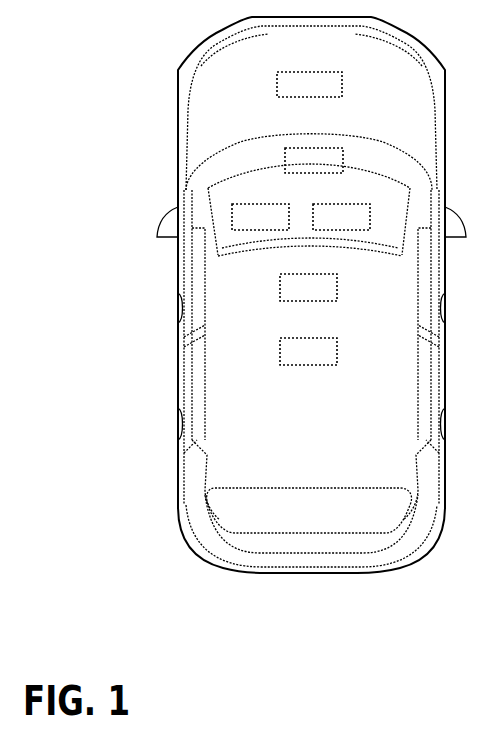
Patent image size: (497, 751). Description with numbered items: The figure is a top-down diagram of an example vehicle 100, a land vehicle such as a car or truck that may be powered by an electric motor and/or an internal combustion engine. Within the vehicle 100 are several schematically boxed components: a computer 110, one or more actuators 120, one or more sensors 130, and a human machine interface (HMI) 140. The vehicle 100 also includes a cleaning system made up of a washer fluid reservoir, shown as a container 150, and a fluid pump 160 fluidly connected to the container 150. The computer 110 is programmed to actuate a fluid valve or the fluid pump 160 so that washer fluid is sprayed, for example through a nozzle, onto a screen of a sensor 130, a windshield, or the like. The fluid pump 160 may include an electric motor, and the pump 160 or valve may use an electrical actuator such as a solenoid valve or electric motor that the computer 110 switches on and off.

The vehicle 100 is at (288, 454).
The computer 110 is at (314, 162).
The actuator 120 is at (309, 86).
The sensor 130 is at (341, 218).
The human machine interface (HMI) 140 is at (260, 218).
The container 150 is at (308, 352).
The fluid pump 160 is at (308, 288).